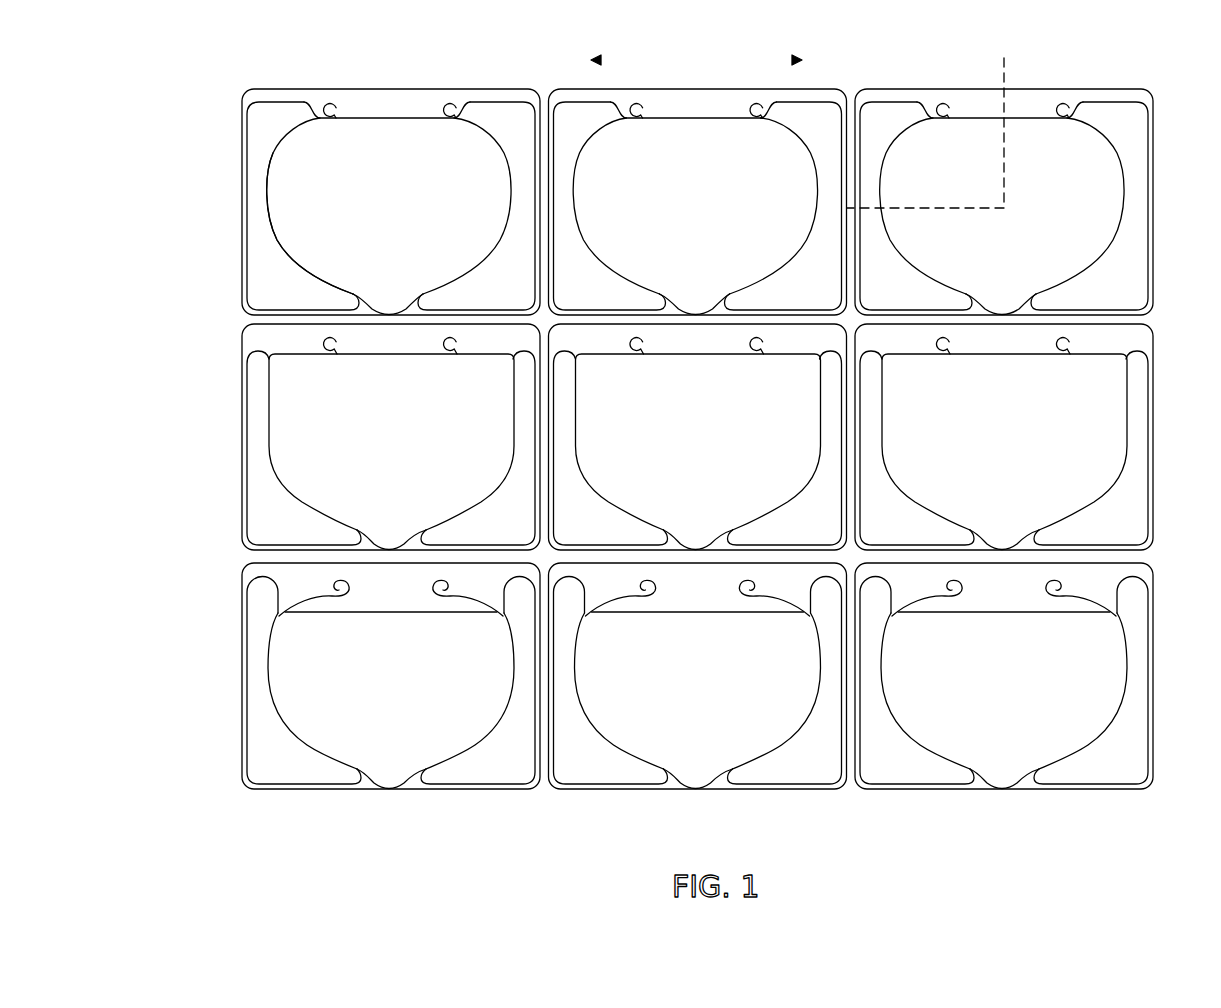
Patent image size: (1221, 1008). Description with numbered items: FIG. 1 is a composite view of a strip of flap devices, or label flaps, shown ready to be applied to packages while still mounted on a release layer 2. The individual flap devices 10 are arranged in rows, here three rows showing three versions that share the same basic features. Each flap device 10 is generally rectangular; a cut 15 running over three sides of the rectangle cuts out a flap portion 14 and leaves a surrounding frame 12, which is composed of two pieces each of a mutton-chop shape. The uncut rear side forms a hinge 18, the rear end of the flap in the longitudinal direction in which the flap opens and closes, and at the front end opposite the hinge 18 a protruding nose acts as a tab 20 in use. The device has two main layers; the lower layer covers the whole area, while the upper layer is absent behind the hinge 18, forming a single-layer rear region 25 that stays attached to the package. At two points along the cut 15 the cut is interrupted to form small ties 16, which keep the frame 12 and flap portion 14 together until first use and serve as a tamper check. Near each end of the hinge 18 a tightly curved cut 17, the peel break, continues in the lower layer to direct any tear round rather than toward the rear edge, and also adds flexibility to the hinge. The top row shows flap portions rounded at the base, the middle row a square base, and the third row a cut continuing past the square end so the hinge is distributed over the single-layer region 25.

The flap device 10 is at (212, 114).
The frame 12 is at (1137, 148).
The flap portion 14 is at (404, 214).
The cut 15 is at (273, 240).
The ties 16 is at (260, 197).
The curved cut 17 is at (330, 103).
The hinge 18 is at (372, 110).
The tab 20 is at (367, 315).
The single-layer rear region 25 is at (457, 103).
The release layer 2 is at (853, 88).